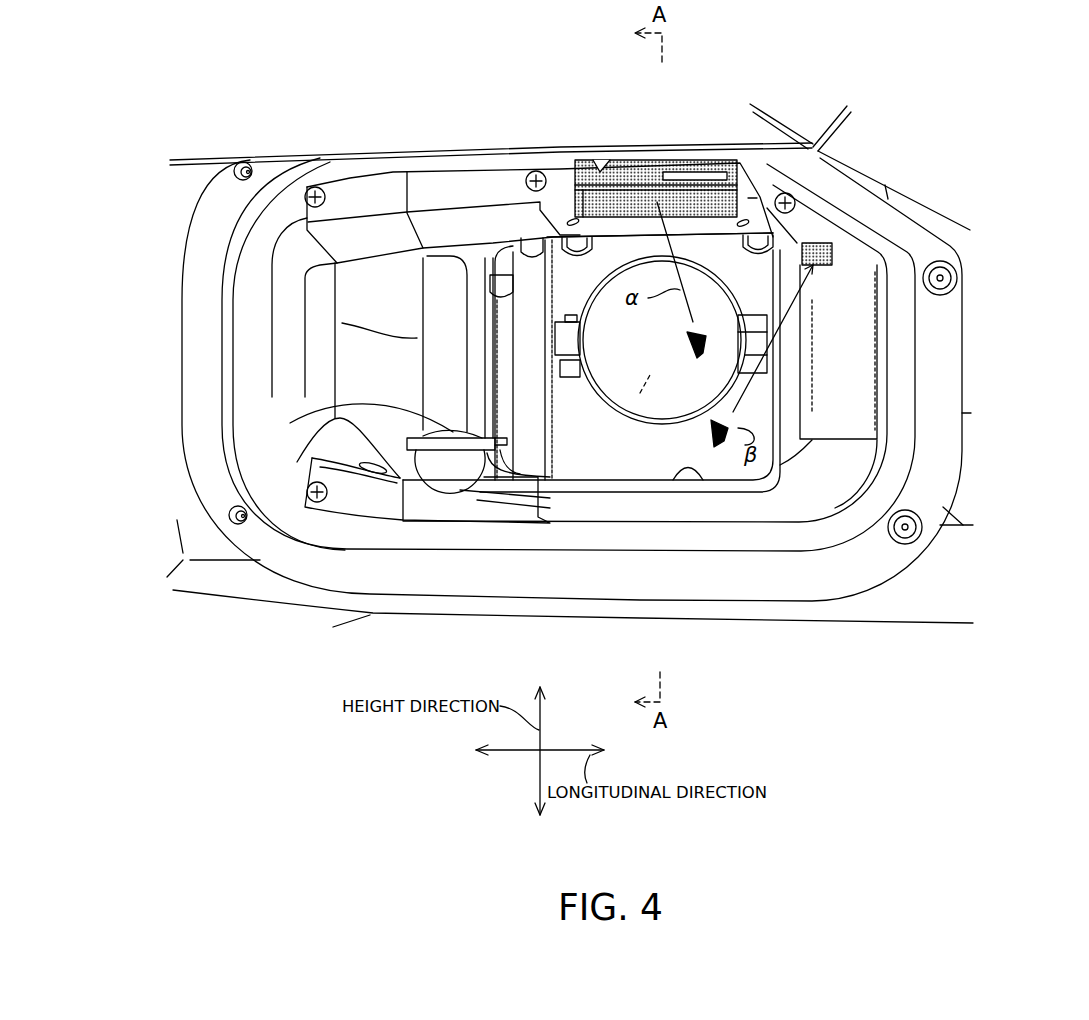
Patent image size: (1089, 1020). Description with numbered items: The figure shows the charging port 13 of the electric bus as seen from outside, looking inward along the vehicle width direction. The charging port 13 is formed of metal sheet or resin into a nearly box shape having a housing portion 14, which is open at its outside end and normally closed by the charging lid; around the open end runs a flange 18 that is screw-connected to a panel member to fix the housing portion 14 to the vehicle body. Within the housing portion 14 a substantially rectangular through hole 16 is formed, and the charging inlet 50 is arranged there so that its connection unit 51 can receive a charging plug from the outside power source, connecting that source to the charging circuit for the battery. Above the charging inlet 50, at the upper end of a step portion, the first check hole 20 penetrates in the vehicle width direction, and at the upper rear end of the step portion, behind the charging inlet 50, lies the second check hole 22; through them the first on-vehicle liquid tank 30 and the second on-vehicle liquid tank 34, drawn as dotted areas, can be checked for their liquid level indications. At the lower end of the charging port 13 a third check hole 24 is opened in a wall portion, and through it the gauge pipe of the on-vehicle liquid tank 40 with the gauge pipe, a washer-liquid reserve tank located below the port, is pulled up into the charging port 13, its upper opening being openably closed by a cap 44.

The charging port 13 is at (250, 351).
The housing portion 14 is at (252, 306).
The through hole 16 is at (703, 478).
The flange 18 is at (196, 400).
The first check hole 20 is at (612, 168).
The second check hole 22 is at (833, 243).
The third check hole 24 is at (457, 467).
The first on-vehicle liquid tank 30 is at (628, 170).
The second on-vehicle liquid tank 34 is at (813, 267).
The on-vehicle liquid tank with gauge pipe 40 is at (437, 463).
The cap 44 is at (290, 423).
The charging inlet 50 is at (618, 368).
The connection unit 51 is at (640, 393).